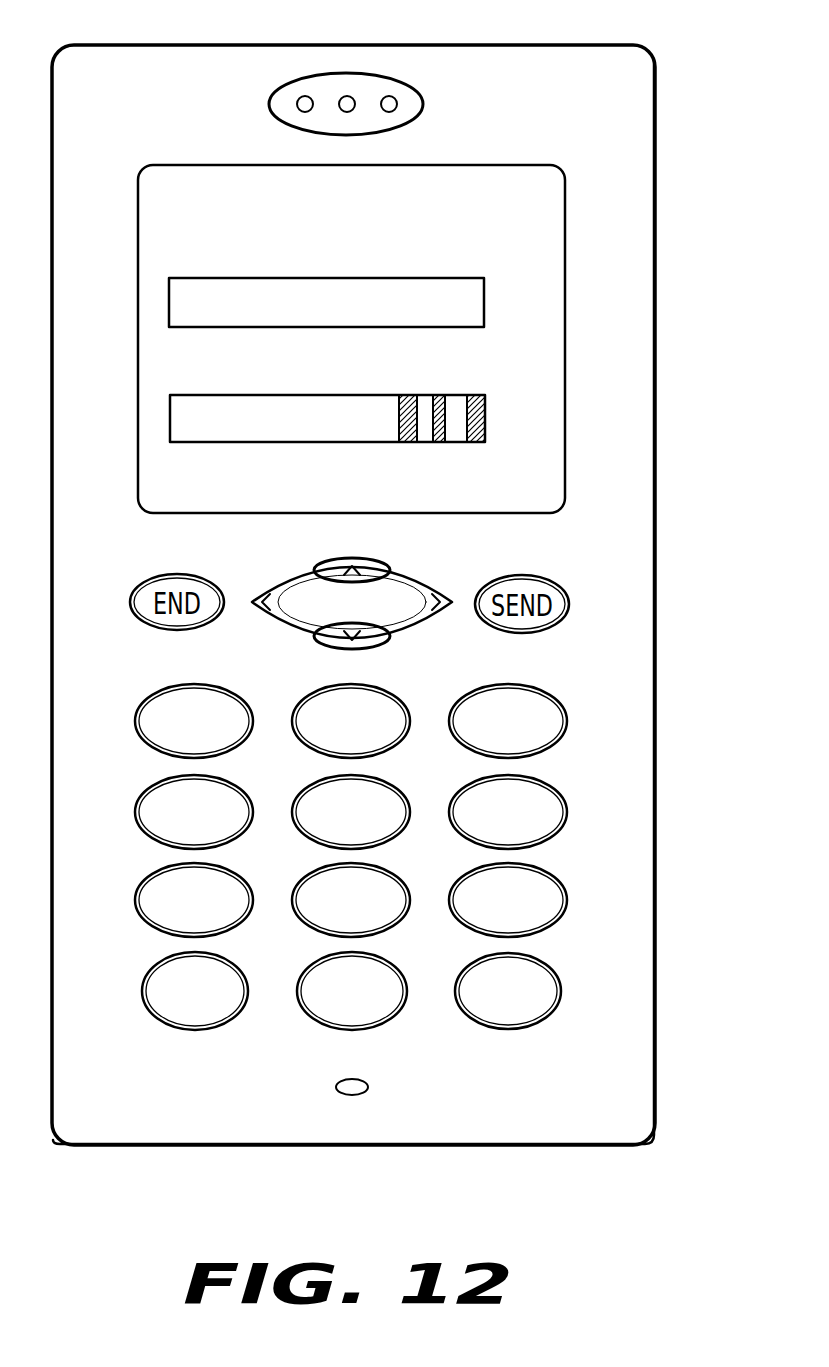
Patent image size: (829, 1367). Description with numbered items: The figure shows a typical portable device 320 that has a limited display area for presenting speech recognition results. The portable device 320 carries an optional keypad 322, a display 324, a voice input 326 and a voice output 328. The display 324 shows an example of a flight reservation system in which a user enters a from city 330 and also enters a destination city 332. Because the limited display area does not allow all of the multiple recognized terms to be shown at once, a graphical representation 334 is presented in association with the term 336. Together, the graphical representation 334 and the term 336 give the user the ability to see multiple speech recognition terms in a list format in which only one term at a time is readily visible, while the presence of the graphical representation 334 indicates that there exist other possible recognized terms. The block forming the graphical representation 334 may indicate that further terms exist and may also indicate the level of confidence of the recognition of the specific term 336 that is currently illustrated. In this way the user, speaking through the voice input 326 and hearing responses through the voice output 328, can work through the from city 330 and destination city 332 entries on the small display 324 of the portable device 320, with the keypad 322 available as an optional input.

The portable device 320 is at (618, 44).
The keypad 322 is at (562, 675).
The display 324 is at (543, 166).
The voice input 326 is at (368, 1086).
The voice output 328 is at (402, 77).
The from city 330 is at (363, 265).
The destination city 332 is at (338, 378).
The graphical representation 334 is at (437, 444).
The term 336 is at (278, 444).